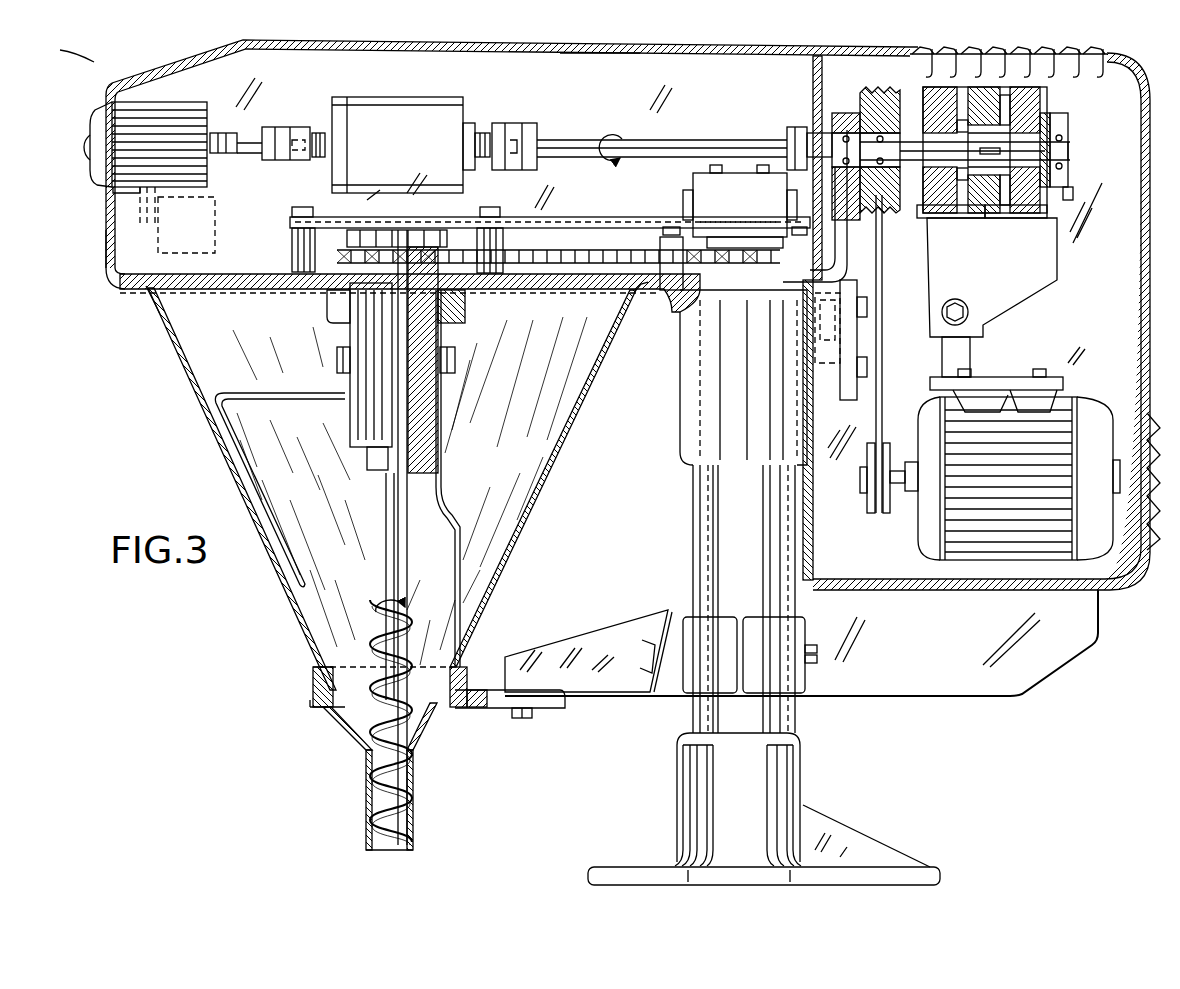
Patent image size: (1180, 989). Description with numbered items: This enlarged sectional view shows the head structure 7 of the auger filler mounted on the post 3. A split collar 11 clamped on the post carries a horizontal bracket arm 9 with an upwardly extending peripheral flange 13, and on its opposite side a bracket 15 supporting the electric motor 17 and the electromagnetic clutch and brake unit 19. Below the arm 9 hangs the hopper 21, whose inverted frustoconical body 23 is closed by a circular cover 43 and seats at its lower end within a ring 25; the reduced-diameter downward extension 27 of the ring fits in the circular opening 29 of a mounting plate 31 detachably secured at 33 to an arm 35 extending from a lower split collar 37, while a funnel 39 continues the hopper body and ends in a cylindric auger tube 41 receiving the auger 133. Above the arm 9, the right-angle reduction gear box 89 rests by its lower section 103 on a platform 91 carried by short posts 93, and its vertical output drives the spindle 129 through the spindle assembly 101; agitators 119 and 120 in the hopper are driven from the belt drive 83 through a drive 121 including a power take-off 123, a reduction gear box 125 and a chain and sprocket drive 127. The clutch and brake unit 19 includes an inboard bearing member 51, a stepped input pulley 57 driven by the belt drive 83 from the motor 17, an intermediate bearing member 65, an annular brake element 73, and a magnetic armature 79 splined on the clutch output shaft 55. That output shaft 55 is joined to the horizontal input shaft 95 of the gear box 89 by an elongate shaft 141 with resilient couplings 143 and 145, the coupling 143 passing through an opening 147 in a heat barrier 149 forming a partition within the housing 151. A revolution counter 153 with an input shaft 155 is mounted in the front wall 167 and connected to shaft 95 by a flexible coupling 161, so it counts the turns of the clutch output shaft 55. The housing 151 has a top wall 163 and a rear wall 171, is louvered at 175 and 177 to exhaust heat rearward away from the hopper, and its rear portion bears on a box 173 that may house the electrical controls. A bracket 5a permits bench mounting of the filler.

The head structure 7 is at (93, 61).
The housing 151 is at (178, 54).
The counter 153 is at (172, 102).
The flexible coupling 161 is at (252, 128).
The input shaft 155 is at (218, 153).
The right-angle drive reduction gear box 89 is at (418, 97).
The horizontal input shaft 95 is at (315, 157).
The resilient coupling 145 is at (515, 132).
The top wall 163 is at (600, 53).
The elongate shaft 141 is at (722, 138).
The heat barrier 149 is at (813, 62).
The opening 147 is at (810, 122).
The resilient coupling 143 is at (790, 132).
The inboard bearing member 51 is at (850, 100).
The stepped clutch input pulley 57 is at (858, 90).
The intermediate bearing member 65 is at (920, 95).
The louvers 175 is at (1066, 76).
The clutch output shaft 55 is at (1070, 155).
The electromagnetic clutch and brake unit 19 is at (1078, 193).
The front wall 167 is at (106, 204).
The peripheral flange 13 is at (112, 248).
The horizontal bracket arm 9 is at (117, 284).
The circular cover 43 is at (152, 296).
The hopper body 23 is at (177, 353).
The agitator 119 is at (240, 440).
The hopper 21 is at (260, 535).
The platform 91 is at (292, 212).
The short posts 93 is at (292, 245).
The lower section 103 is at (445, 212).
The reduction gear box 125 is at (760, 211).
The chain and sprocket drive 127 is at (633, 254).
The drive 121 is at (845, 262).
The magnetic armature 79 is at (990, 218).
The annular electromagnetic brake element 73 is at (1020, 218).
The rear wall 171 is at (1141, 245).
The bracket 15 is at (1028, 290).
The power take-off 123 is at (822, 348).
The electric motor 17 is at (1104, 377).
The spindle assembly 101 is at (347, 413).
The split collar 11 is at (680, 463).
The belt drive 83 is at (872, 513).
The spindle 129 is at (400, 535).
The agitator 120 is at (463, 563).
The louvers 177 is at (1138, 580).
The arm 35 is at (573, 640).
The ring 25 is at (318, 668).
The reduced-diameter downward extension 27 is at (313, 692).
The mounting plate 31 is at (313, 703).
The circular opening 29 is at (452, 712).
The detachable securing means 33 is at (520, 712).
The funnel 39 is at (360, 738).
The post 3 is at (690, 712).
The split collar 37 is at (803, 695).
The cylindric lower end 41 is at (367, 798).
The auger 133 is at (413, 806).
The bracket 5a is at (640, 865).
The box 173 is at (973, 697).